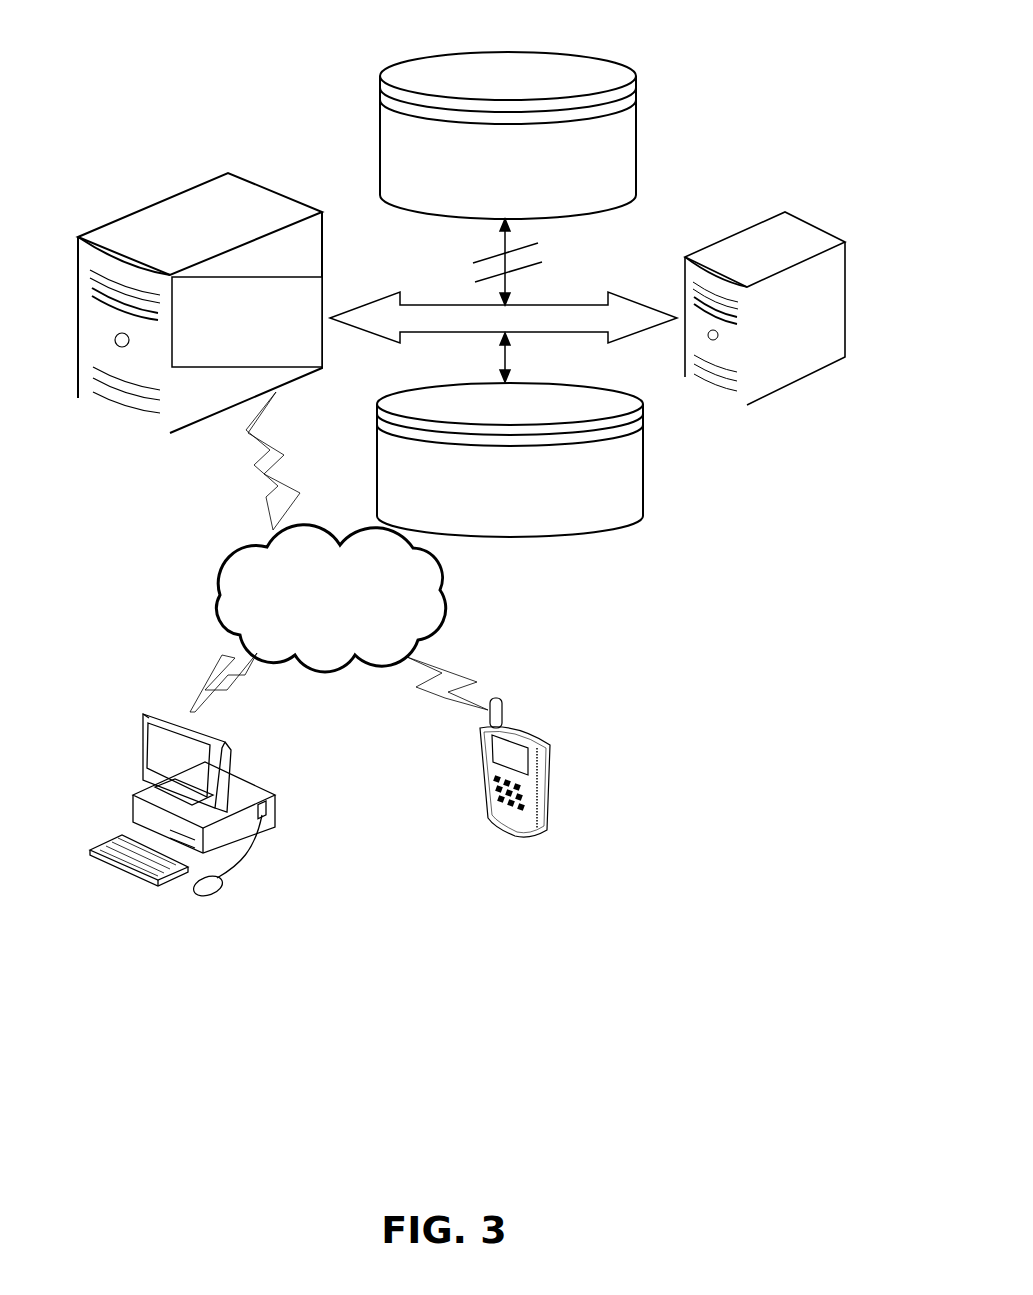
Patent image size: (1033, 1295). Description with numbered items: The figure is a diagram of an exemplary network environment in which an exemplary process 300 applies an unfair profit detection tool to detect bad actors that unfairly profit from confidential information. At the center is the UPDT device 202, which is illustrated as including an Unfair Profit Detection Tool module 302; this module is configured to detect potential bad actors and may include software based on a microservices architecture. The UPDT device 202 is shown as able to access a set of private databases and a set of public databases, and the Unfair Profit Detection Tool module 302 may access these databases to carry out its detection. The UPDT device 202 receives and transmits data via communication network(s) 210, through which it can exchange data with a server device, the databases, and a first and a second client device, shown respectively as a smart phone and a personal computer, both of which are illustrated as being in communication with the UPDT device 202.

The exemplary process 300 is at (280, 80).
The UPDT device 202 is at (123, 206).
The Unfair Profit Detection Tool module 302 is at (247, 322).
The communication network(s) 210 is at (433, 465).